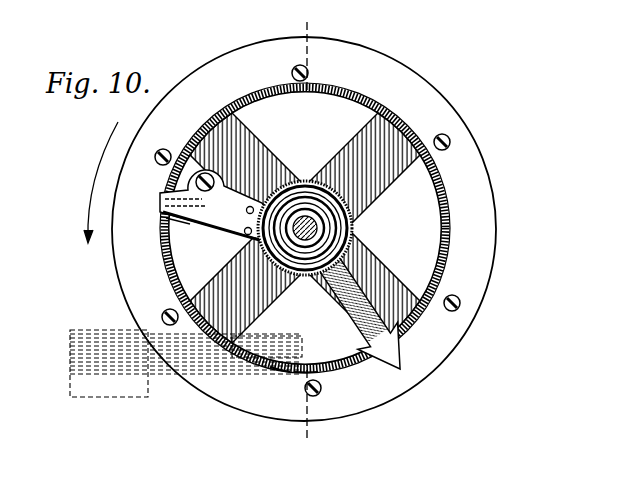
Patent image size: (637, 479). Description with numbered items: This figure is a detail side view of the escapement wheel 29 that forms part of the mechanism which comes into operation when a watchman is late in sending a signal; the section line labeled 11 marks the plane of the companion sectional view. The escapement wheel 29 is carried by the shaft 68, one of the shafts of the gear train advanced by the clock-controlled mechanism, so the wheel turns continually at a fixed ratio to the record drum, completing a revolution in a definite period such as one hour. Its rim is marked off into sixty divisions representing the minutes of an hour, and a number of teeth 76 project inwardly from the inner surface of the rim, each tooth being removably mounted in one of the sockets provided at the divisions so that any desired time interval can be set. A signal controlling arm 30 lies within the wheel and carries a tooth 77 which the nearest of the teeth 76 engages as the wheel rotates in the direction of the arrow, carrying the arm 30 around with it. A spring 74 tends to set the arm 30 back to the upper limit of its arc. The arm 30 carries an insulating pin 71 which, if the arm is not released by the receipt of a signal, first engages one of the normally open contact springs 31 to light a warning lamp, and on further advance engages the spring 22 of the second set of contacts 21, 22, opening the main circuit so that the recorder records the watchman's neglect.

The section line 11 is at (318, 19).
The contact 21 is at (278, 372).
The contact spring 22 is at (305, 377).
The escapement wheel 29 is at (497, 228).
The signal controlling arm 30 is at (215, 225).
The contacts 31 is at (285, 340).
The shaft 68 is at (355, 228).
The insulating pin 71 is at (236, 160).
The spring 74 is at (315, 192).
The teeth 76 is at (268, 90).
The tooth 77 is at (190, 227).